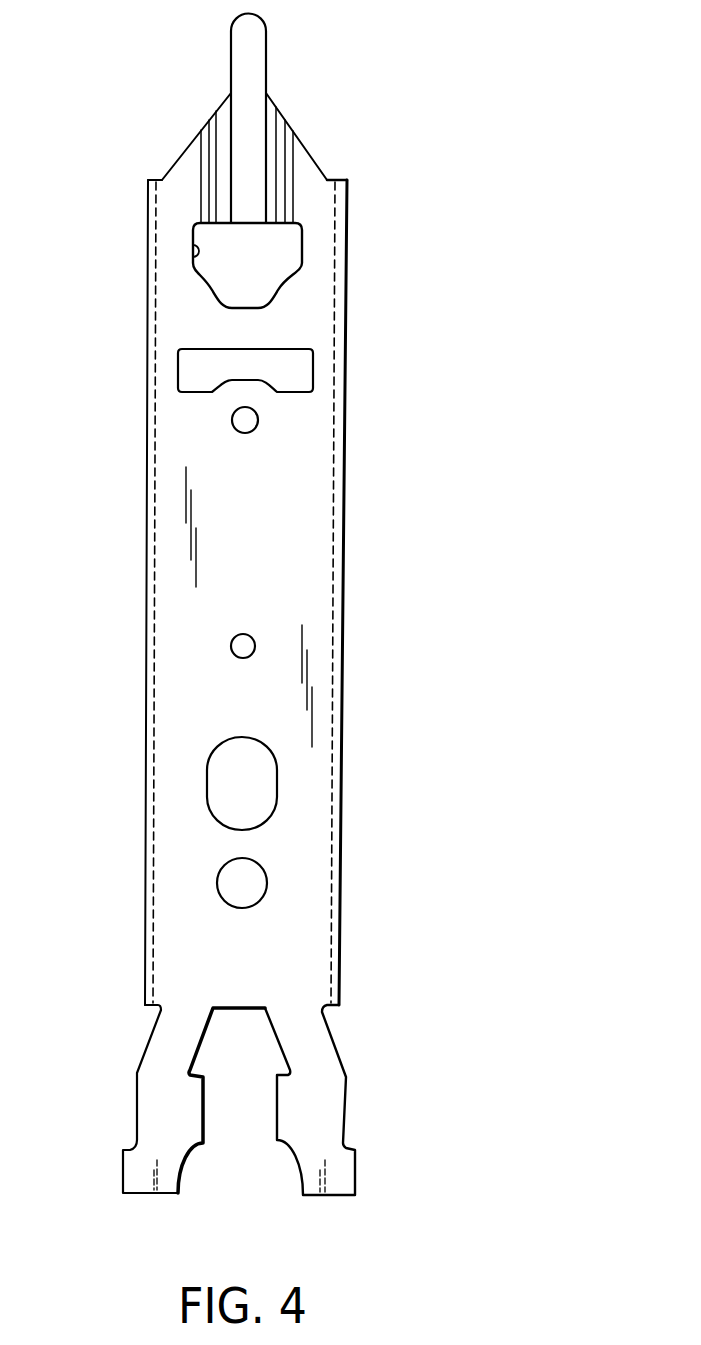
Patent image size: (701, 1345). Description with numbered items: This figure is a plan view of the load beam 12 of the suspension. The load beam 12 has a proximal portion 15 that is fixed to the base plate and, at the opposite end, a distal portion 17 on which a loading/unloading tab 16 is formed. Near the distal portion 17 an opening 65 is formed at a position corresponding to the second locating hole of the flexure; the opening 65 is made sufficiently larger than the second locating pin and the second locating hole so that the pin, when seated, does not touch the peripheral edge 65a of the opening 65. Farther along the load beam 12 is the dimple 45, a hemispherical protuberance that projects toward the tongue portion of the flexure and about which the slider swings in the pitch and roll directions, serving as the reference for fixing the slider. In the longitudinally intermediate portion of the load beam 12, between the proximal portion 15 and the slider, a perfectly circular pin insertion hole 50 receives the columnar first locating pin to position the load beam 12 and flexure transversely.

The load beam 12 is at (146, 553).
The proximal portion 15 is at (330, 1113).
The loading/unloading tab 16 is at (252, 42).
The distal portion 17 is at (273, 105).
The dimple 45 is at (240, 417).
The pin insertion hole 50 is at (228, 882).
The opening 65 is at (288, 257).
The peripheral edge 65a is at (193, 247).